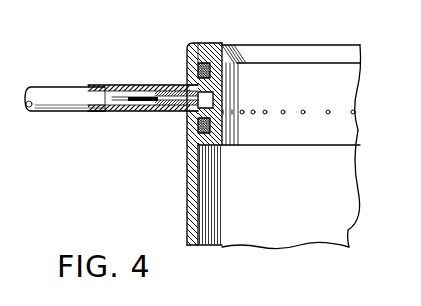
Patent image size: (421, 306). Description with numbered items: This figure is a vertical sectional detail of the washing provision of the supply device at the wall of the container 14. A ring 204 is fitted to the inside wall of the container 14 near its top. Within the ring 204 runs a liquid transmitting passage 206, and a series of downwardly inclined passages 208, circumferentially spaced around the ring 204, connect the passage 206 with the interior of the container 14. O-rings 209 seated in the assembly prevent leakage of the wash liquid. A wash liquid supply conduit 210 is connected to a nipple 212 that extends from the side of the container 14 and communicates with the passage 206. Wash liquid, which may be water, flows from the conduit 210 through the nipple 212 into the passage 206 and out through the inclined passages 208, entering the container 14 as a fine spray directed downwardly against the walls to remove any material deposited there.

The container 14 is at (187, 199).
The ring 204 is at (350, 148).
The liquid transmitting passage 206 is at (190, 88).
The downwardly inclined passages 208 is at (224, 110).
The O-rings 209 is at (213, 45).
The wash liquid supply conduit 210 is at (62, 86).
The nipple 212 is at (138, 106).